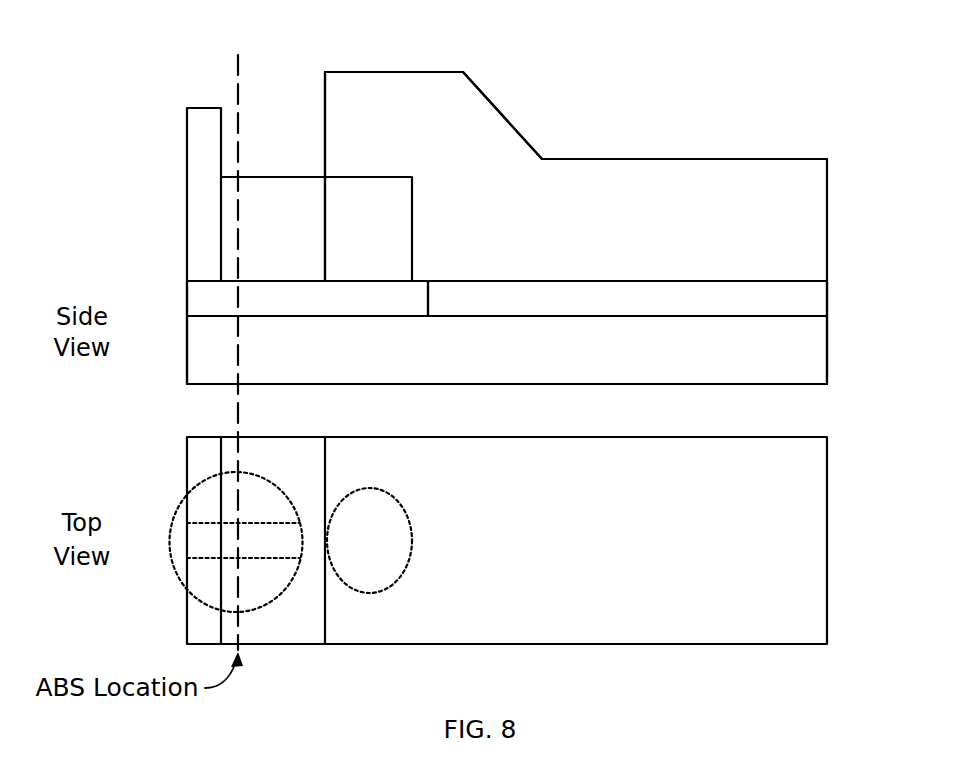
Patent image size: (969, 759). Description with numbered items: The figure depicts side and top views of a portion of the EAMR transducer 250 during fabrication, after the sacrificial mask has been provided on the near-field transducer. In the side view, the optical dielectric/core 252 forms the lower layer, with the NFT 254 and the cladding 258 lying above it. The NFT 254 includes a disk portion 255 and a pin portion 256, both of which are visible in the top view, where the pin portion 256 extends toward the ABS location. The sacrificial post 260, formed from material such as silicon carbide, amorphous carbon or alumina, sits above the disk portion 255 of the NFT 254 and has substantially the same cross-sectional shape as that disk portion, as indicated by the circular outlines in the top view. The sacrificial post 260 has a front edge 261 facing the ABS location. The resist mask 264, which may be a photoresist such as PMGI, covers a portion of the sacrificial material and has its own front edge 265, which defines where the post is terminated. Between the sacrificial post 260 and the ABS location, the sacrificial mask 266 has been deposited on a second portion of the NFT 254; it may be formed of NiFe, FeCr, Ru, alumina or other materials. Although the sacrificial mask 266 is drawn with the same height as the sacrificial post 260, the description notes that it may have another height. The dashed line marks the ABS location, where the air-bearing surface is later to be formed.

The EAMR transducer 250 is at (460, 50).
The optical dielectric/core 252 is at (186, 350).
The NFT 254 is at (412, 318).
The disk portion 255 is at (452, 544).
The pin portion 256 is at (254, 504).
The cladding 258 is at (829, 298).
The sacrificial post 260 is at (376, 177).
The front edge 261 is at (300, 503).
The resist mask 264 is at (548, 159).
The front edge 265 is at (314, 70).
The sacrificial mask 266 is at (262, 177).